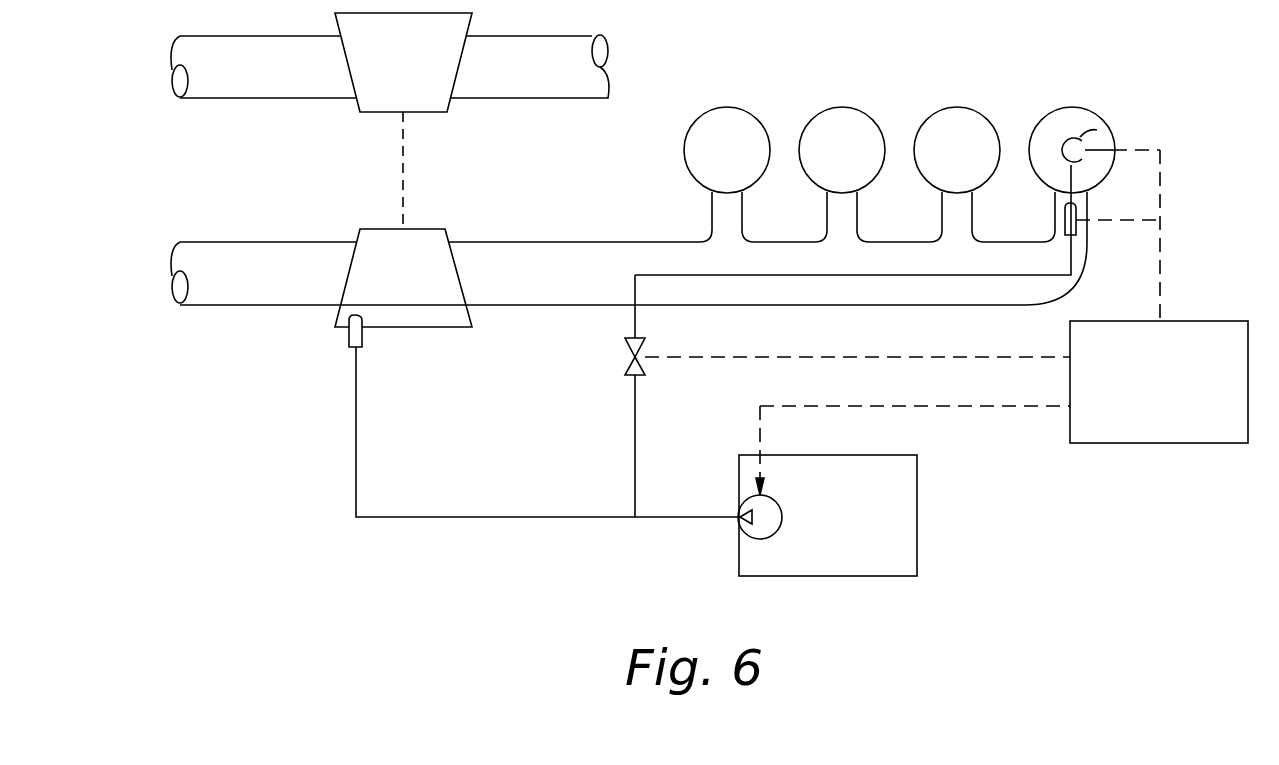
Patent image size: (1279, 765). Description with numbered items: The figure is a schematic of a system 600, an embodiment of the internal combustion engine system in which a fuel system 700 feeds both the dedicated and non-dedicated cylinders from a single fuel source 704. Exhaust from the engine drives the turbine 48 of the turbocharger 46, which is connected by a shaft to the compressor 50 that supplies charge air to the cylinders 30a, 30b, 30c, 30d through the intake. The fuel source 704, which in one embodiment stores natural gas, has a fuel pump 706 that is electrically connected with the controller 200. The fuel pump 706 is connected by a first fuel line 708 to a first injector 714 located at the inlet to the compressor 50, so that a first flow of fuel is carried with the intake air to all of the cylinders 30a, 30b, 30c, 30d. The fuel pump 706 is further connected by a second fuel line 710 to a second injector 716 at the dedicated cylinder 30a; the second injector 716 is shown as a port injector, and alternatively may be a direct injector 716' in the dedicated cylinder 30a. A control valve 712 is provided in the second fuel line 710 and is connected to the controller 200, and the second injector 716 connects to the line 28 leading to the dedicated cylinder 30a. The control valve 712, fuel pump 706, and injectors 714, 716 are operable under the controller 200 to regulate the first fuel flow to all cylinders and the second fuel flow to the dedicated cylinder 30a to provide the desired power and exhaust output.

The turbine 48 is at (391, 75).
The turbocharger 46 is at (378, 165).
The compressor 50 is at (391, 295).
The dedicated cylinder 30a is at (1040, 117).
The cylinder 30b is at (925, 117).
The cylinder 30c is at (810, 117).
The cylinder 30d is at (695, 117).
The direct injector 716' is at (1106, 116).
The second injector 716 is at (1105, 231).
The conduit 28 is at (823, 306).
The control valve 712 is at (630, 355).
The second fuel line 710 is at (633, 470).
The first injector 714 is at (348, 332).
The first fuel line 708 is at (468, 519).
The fuel source 704 is at (810, 527).
The fuel pump 706 is at (748, 536).
The controller 200 is at (1141, 397).
The system 600 is at (166, 377).
The fuel system 700 is at (1065, 472).